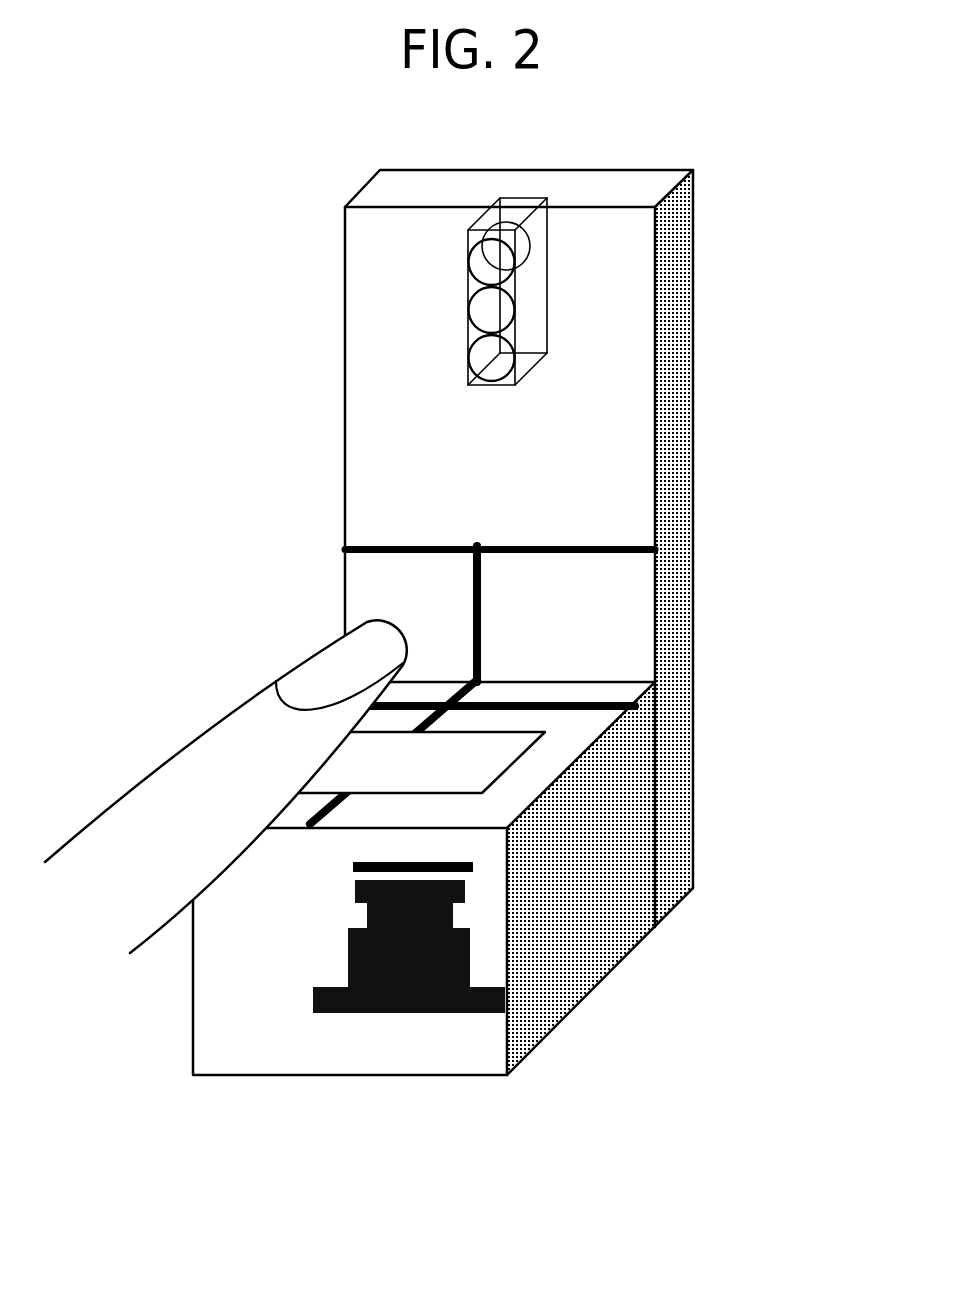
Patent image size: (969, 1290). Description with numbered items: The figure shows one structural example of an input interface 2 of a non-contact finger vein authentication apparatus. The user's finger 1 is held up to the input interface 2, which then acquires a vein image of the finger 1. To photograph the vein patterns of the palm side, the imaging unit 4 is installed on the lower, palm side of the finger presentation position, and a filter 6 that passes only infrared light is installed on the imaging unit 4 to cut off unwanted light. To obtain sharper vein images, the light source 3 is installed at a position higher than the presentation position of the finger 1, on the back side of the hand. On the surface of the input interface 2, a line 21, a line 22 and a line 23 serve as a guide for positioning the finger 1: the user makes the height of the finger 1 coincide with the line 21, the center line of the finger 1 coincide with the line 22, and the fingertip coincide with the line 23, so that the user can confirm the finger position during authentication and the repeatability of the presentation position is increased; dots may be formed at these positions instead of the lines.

The finger 1 is at (210, 757).
The input interface 2 is at (345, 270).
The light source 3 is at (512, 270).
The imaging unit 4 is at (463, 987).
The filter 6 is at (357, 867).
The line 21 is at (608, 546).
The line 22 is at (337, 808).
The line 23 is at (590, 708).